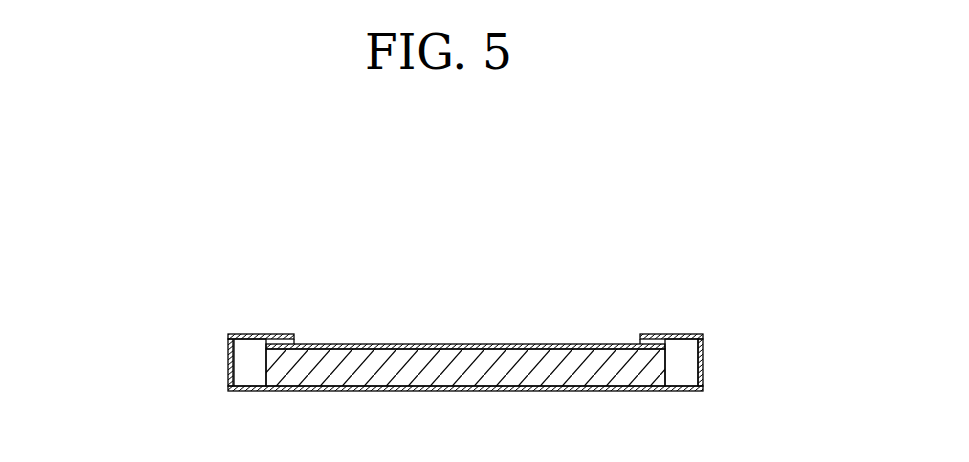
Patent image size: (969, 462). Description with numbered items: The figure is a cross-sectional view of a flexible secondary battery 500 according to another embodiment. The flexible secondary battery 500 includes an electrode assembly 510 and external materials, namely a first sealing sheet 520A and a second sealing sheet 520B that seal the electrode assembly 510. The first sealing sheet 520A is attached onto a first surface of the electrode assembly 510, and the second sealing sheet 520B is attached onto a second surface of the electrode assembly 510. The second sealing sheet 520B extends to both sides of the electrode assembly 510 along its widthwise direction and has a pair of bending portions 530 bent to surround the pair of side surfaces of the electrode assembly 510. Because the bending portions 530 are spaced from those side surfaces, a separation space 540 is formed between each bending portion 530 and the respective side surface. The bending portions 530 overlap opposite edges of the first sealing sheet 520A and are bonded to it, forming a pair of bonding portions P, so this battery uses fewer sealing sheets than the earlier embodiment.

The flexible secondary battery 500 is at (459, 316).
The electrode assembly 510 is at (385, 368).
The first sealing sheet 520A is at (512, 345).
The second sealing sheet 520B is at (512, 392).
The bending portions 530 is at (228, 355).
The separation space 540 is at (253, 360).
The bonding portion P is at (295, 331).